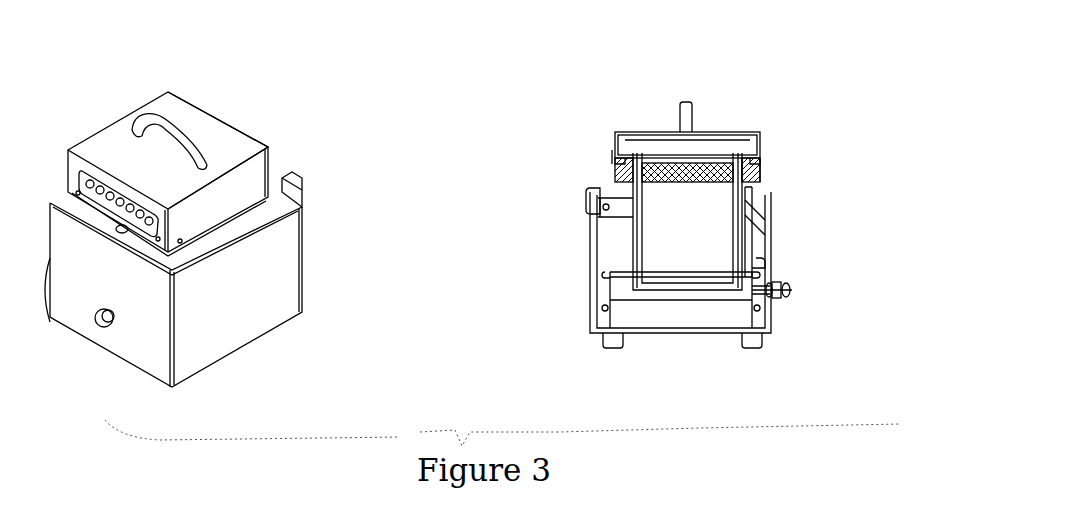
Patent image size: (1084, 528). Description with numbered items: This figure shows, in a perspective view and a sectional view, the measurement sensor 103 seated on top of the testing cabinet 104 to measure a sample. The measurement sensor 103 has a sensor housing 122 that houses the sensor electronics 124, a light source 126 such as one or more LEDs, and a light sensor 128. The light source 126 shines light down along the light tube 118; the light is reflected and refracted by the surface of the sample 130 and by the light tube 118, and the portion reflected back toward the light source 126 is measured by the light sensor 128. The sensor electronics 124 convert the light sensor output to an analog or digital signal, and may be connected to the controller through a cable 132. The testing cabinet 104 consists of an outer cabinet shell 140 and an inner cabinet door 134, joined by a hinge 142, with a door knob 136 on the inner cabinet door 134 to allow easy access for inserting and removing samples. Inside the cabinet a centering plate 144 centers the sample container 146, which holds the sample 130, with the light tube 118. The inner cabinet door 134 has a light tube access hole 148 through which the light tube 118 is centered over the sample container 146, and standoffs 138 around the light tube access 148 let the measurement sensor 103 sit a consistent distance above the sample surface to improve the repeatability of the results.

The measurement sensor 103 is at (208, 105).
The testing cabinet 104 is at (262, 352).
The light tube 118 is at (754, 220).
The sensor housing 122 is at (233, 167).
The sensor electronics 124 is at (692, 146).
The light source 126 is at (651, 191).
The light sensor 128 is at (686, 184).
The sample 130 is at (688, 319).
The cable 132 is at (612, 156).
The inner cabinet door 134 is at (205, 268).
The door knob 136 is at (792, 294).
The standoffs 138 is at (765, 177).
The outer cabinet shell 140 is at (265, 295).
The hinge 142 is at (592, 197).
The centering plate 144 is at (770, 284).
The sample container 146 is at (759, 266).
The light tube access hole 148 is at (624, 189).